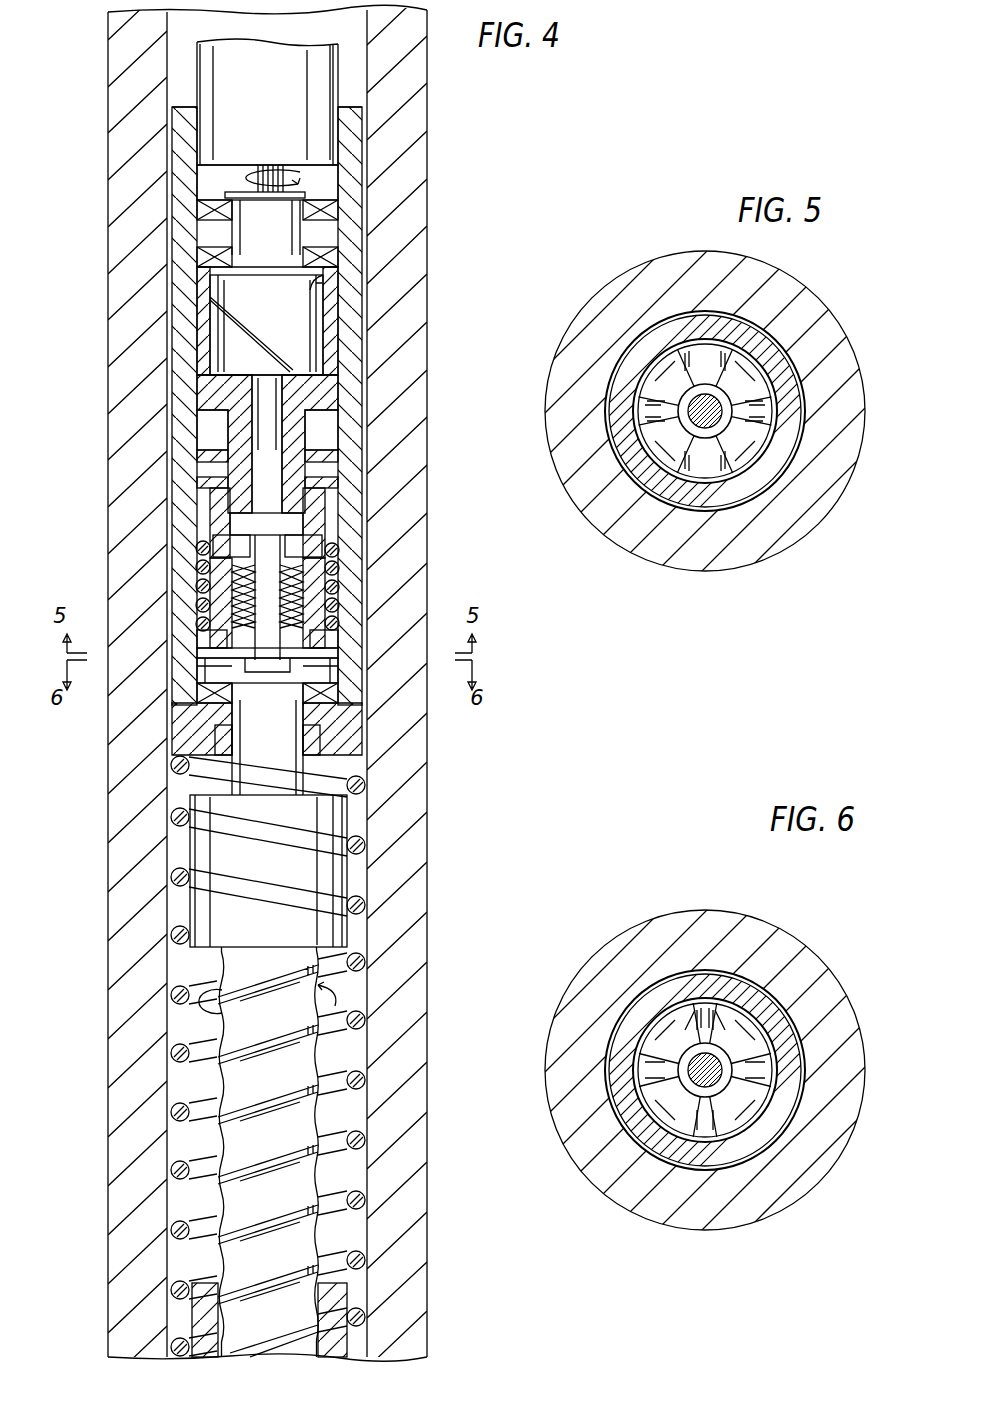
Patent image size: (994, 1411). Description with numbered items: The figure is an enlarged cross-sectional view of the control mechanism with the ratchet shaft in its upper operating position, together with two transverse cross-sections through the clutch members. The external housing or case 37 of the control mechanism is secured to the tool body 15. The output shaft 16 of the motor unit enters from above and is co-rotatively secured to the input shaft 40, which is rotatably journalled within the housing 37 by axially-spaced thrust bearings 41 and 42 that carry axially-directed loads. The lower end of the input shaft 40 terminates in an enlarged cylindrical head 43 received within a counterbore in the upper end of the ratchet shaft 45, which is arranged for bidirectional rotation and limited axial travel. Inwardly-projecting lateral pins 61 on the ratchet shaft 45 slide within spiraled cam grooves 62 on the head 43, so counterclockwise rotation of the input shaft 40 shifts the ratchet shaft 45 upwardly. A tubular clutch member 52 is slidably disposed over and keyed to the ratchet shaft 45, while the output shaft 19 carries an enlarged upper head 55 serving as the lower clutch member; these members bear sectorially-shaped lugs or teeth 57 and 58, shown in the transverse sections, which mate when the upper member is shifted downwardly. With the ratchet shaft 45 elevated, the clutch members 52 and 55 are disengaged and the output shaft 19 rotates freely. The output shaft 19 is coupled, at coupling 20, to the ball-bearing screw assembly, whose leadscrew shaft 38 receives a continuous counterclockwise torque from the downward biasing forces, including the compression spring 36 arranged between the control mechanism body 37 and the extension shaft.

In FIG. 4, the tool body 15 is at (418, 884).
In FIG. 4, the output shaft of the motor unit 16 is at (210, 84).
In FIG. 4, the output shaft of the control mechanism 19 is at (253, 770).
In FIG. 4, the coupling 20 is at (220, 893).
In FIG. 4, the compression spring 36 is at (178, 1015).
In FIG. 4, the housing or case of the control mechanism 37 is at (362, 432).
In FIG. 4, the leadscrew shaft 38 is at (287, 1160).
In FIG. 4, the input shaft 40 is at (248, 229).
In FIG. 4, the thrust bearing 41 is at (332, 208).
In FIG. 4, the thrust bearing 42 is at (337, 254).
In FIG. 4, the enlarged cylindrical head 43 is at (285, 321).
In FIG. 4, the ratchet shaft 45 is at (197, 345).
In FIG. 4, the tubular clutch member 52 is at (338, 582).
In FIG. 5, the tubular clutch member 52 is at (689, 485).
In FIG. 4, the enlarged upper head of the output shaft 55 is at (340, 676).
In FIG. 6, the enlarged upper head of the output shaft 55 is at (705, 1066).
In FIG. 5, the axially-projecting sectorially-shaped lugs or teeth 57 is at (720, 479).
In FIG. 6, the axially-projecting sectorially-shaped lugs or teeth 58 is at (705, 1141).
In FIG. 4, the lateral cam pins 61 is at (325, 283).
In FIG. 4, the spiraled cam grooves 62 is at (300, 352).